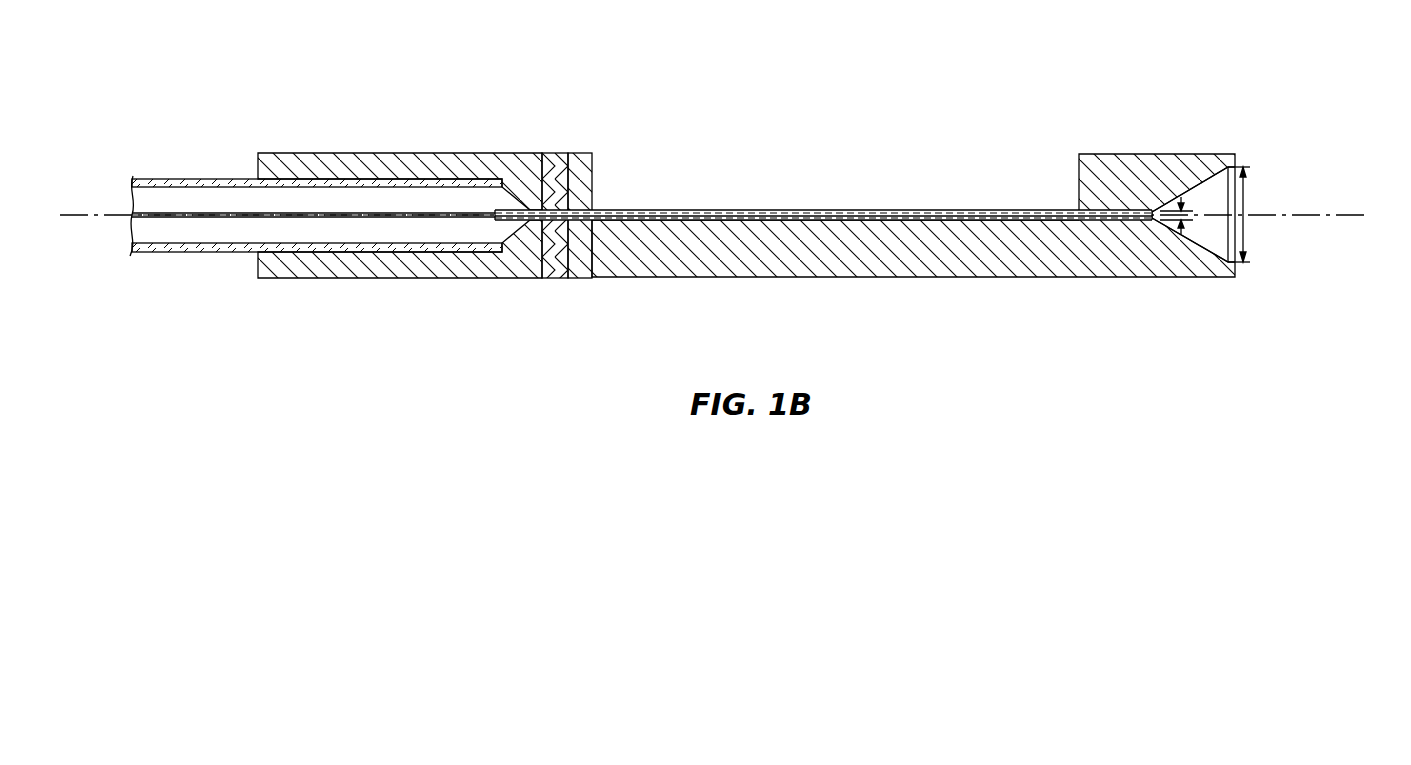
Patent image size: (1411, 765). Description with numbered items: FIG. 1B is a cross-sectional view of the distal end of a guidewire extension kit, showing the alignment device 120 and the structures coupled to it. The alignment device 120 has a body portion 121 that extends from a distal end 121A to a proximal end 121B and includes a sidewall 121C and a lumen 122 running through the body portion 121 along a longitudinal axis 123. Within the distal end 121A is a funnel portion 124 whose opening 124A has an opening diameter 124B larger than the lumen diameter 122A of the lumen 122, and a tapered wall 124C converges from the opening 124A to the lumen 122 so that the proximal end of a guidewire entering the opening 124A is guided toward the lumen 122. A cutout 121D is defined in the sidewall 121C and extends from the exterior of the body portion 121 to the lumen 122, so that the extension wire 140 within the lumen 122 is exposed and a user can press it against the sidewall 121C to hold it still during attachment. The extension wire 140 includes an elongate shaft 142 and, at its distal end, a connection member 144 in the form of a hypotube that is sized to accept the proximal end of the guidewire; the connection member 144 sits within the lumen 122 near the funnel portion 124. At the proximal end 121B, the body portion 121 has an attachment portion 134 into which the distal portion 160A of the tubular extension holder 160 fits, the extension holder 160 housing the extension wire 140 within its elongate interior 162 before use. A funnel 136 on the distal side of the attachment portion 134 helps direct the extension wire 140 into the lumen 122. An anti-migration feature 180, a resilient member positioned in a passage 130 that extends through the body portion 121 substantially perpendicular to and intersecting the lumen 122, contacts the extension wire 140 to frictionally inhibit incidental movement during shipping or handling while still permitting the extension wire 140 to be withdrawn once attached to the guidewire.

The alignment device 120 is at (1055, 53).
The body portion 121 is at (769, 216).
The distal end 121A is at (1237, 272).
The proximal end 121B is at (250, 272).
The sidewall 121C is at (1133, 154).
The cutout 121D is at (826, 185).
The lumen 122 is at (580, 222).
The lumen diameter 122A is at (1200, 222).
The longitudinal axis 123 is at (1333, 215).
The funnel portion 124 is at (1227, 176).
The opening 124A is at (1238, 258).
The opening diameter 124B is at (1245, 205).
The tapered wall 124C is at (1205, 188).
The passage 130 is at (545, 258).
The attachment portion 134 is at (376, 182).
The funnel 136 is at (502, 196).
The extension wire 140 is at (307, 177).
The shaft 142 is at (333, 214).
The connection member 144 is at (876, 210).
The extension holder 160 is at (365, 223).
The distal portion 160A is at (397, 248).
The interior 162 is at (360, 233).
The anti-migration feature 180 is at (556, 175).